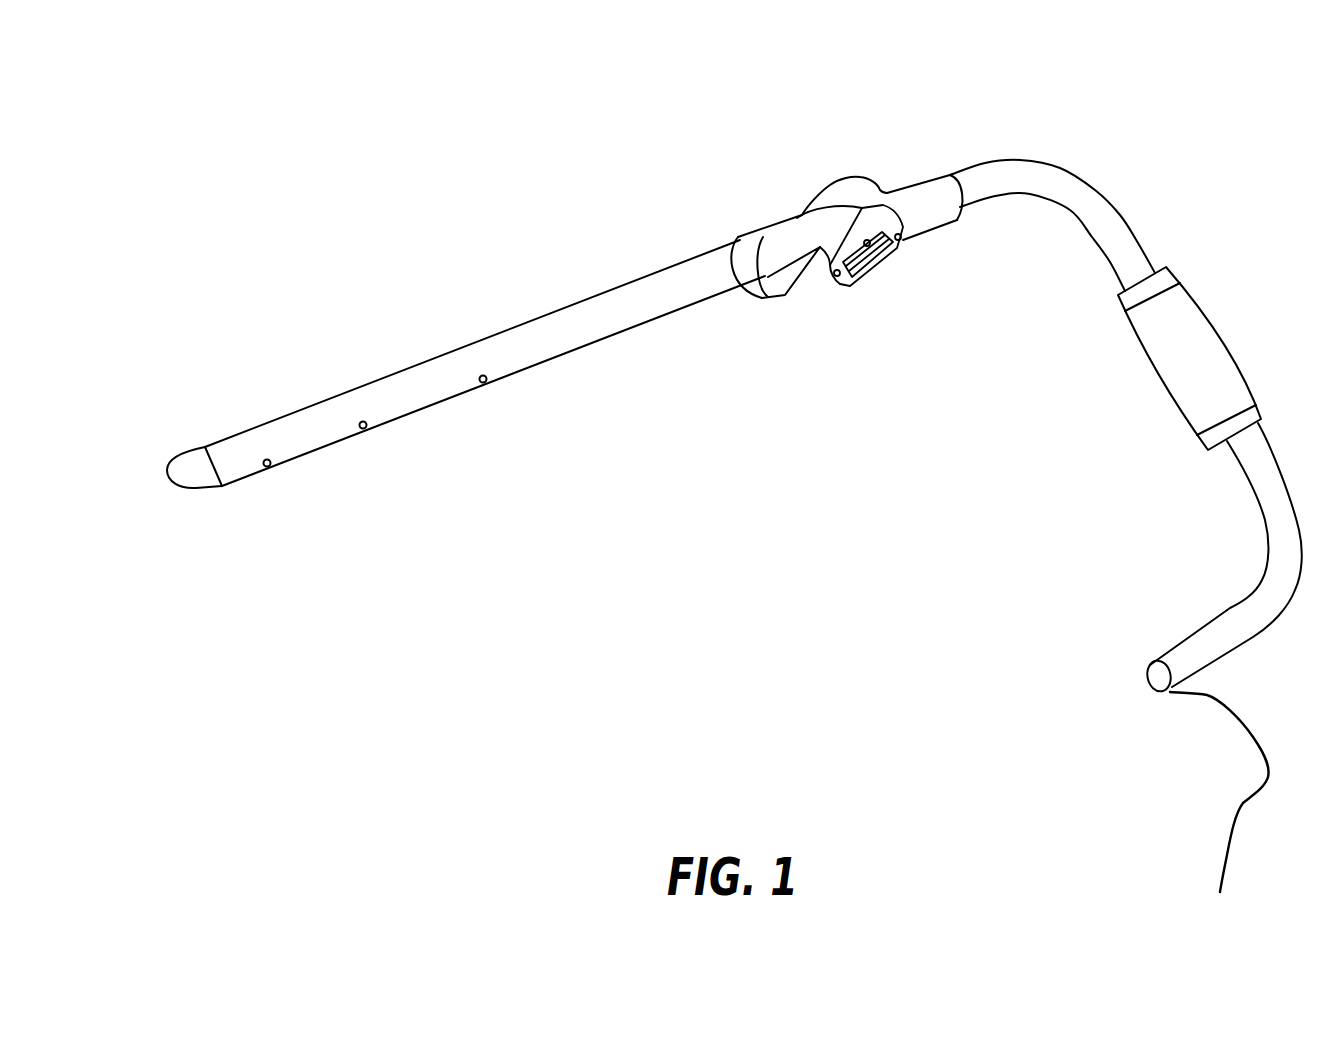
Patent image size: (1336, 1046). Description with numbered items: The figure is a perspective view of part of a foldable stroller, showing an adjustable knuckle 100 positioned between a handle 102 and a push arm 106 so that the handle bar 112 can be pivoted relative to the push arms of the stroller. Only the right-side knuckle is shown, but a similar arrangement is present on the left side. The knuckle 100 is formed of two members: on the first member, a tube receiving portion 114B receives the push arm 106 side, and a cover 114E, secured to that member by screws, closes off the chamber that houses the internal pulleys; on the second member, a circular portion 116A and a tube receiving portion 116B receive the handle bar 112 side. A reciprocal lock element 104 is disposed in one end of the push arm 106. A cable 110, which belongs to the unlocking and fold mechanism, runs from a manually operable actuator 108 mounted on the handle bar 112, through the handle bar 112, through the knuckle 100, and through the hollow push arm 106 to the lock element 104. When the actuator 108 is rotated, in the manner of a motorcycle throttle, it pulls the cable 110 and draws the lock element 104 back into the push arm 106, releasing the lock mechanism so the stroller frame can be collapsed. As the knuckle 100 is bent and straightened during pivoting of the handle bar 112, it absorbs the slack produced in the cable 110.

The adjustable knuckle 100 is at (767, 188).
The handle 102 is at (1057, 152).
The reciprocal lock element 104 is at (197, 463).
The push arm 106 is at (358, 398).
The manually operable actuator 108 is at (1187, 330).
The cable 110 is at (1247, 730).
The handle bar 112 is at (1087, 200).
The tube receiving portion 114B is at (737, 228).
The cover 114E is at (888, 232).
The circular portion 116A is at (845, 184).
The tube receiving portion 116B is at (939, 214).